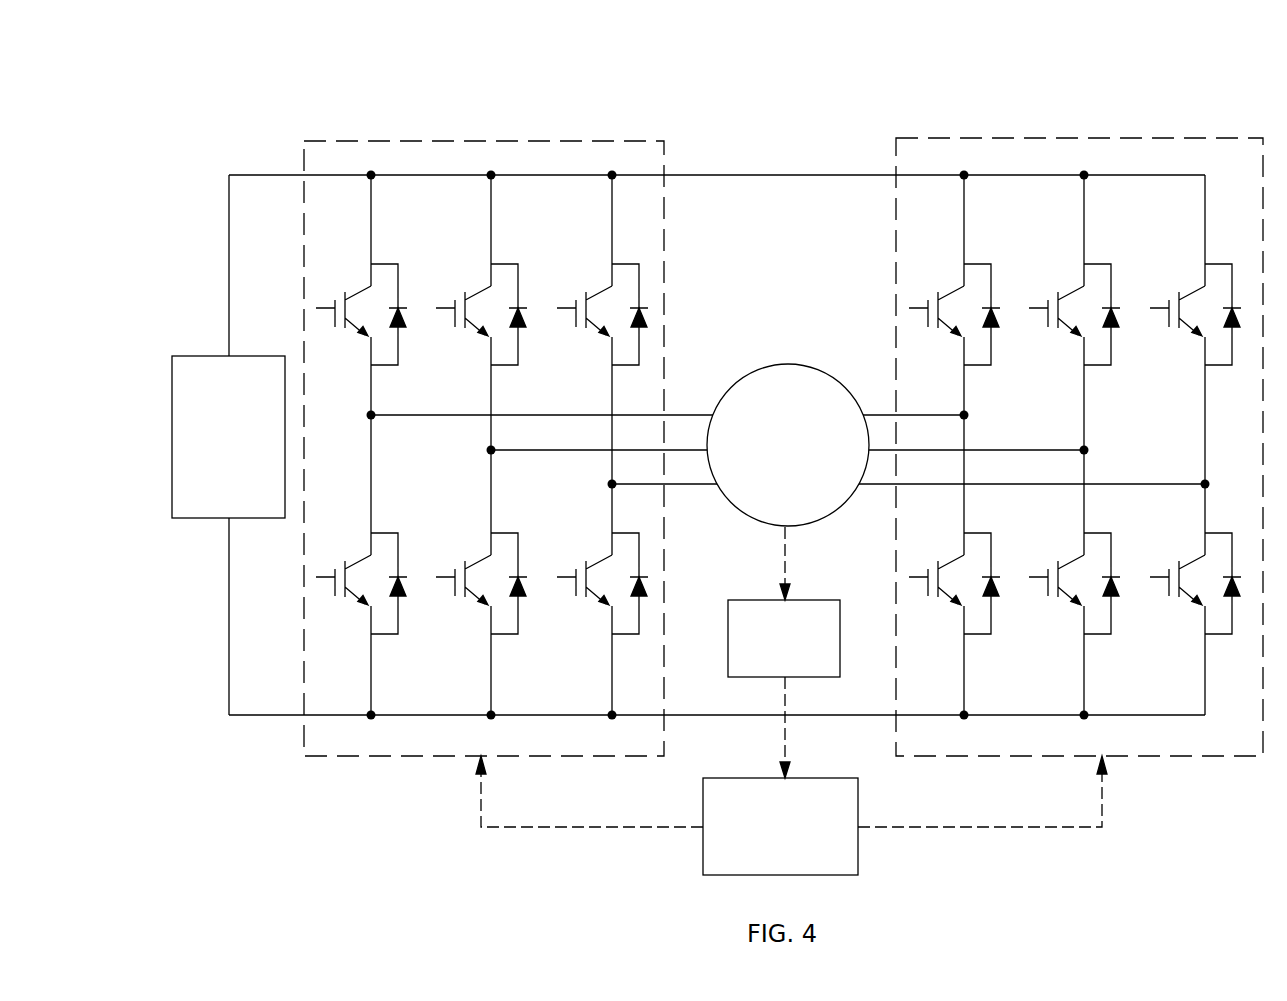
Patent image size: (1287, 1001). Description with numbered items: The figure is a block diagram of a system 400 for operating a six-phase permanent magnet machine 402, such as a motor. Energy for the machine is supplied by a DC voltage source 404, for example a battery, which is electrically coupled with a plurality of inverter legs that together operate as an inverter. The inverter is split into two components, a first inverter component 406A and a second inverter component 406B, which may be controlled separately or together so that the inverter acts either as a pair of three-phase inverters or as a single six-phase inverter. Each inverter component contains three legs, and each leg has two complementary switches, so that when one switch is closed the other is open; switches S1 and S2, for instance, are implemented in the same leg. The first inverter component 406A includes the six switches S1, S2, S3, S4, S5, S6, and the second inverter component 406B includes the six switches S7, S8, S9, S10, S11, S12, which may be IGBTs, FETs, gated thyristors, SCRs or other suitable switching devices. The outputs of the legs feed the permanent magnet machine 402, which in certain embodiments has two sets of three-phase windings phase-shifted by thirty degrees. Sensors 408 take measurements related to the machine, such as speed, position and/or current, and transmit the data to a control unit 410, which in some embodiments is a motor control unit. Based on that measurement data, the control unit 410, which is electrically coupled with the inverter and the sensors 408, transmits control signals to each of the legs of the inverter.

The system 400 is at (1227, 42).
The six-phase permanent magnet machine 402 is at (788, 445).
The DC voltage source 404 is at (228, 445).
The first inverter component 406A is at (498, 140).
The second inverter component 406B is at (1163, 137).
The sensors 408 is at (784, 602).
The control unit 410 is at (791, 776).
The switch S1 is at (361, 303).
The switch S2 is at (361, 571).
The switch S3 is at (481, 303).
The switch S4 is at (481, 571).
The switch S5 is at (602, 303).
The switch S6 is at (602, 571).
The switch S7 is at (954, 303).
The switch S8 is at (954, 571).
The switch S9 is at (1074, 303).
The switch S10 is at (1074, 571).
The switch S11 is at (1195, 303).
The switch S12 is at (1195, 571).